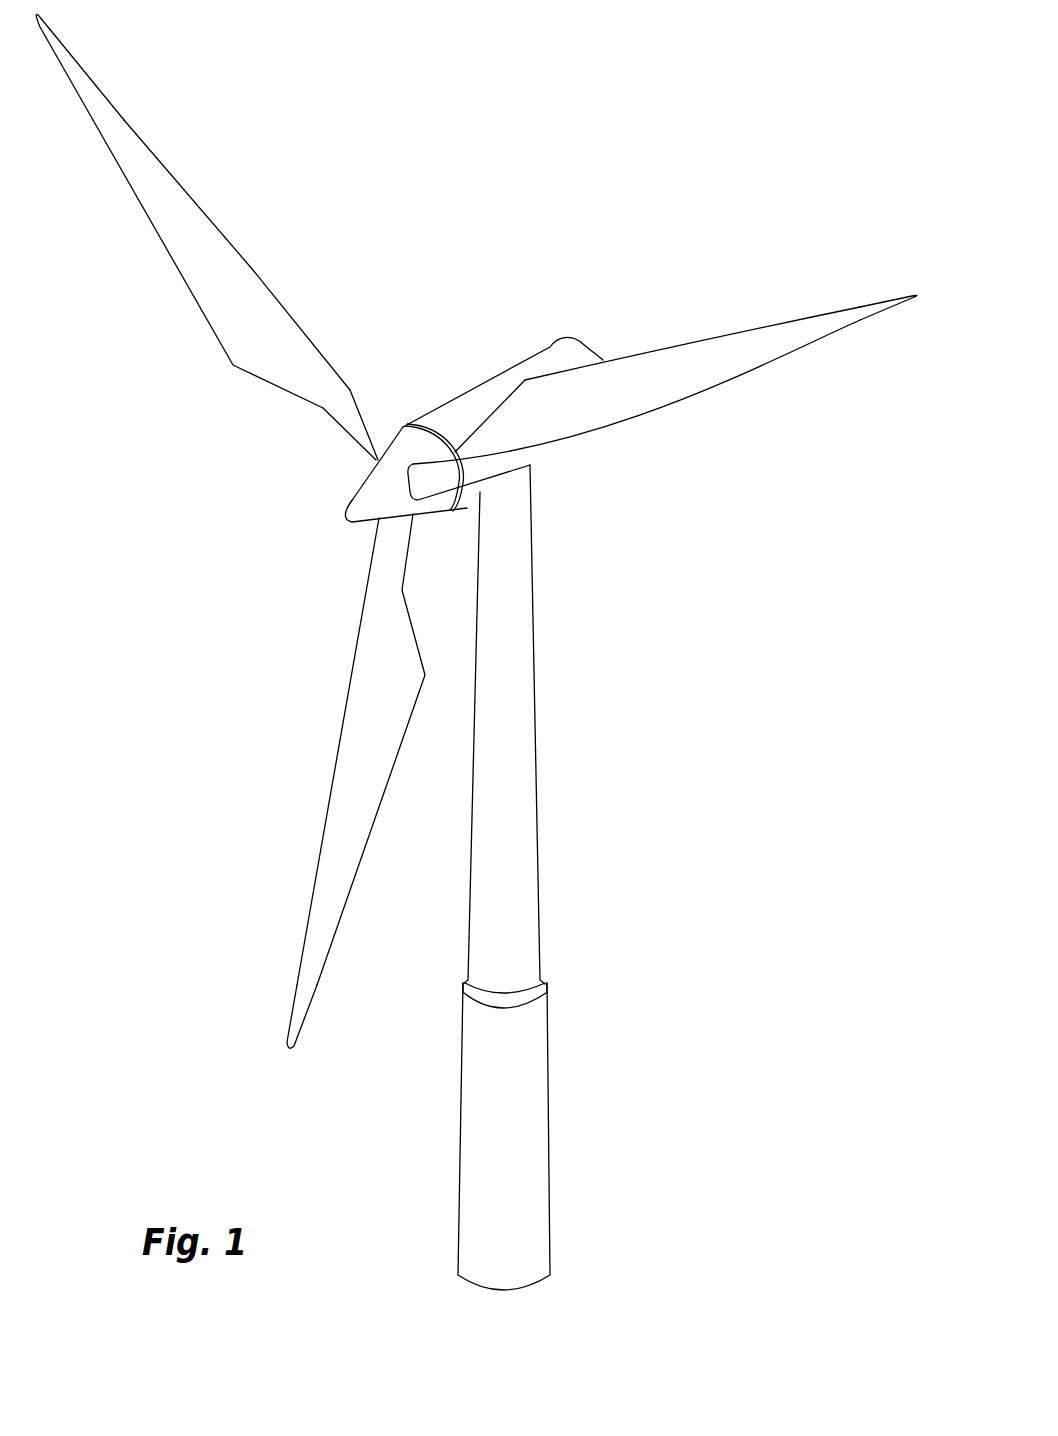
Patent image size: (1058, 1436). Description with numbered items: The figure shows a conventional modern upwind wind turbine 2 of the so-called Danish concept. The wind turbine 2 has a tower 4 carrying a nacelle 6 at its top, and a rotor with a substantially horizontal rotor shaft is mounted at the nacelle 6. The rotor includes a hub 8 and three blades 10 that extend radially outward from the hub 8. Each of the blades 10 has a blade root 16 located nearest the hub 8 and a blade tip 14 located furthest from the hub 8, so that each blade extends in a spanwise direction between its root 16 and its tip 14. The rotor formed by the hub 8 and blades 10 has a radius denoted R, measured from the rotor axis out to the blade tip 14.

The wind turbine 2 is at (652, 808).
The tower 4 is at (523, 727).
The nacelle 6 is at (467, 405).
The hub 8 is at (362, 497).
The blades 10 is at (247, 333).
The blade tip 14 is at (80, 74).
The blade root 16 is at (375, 447).